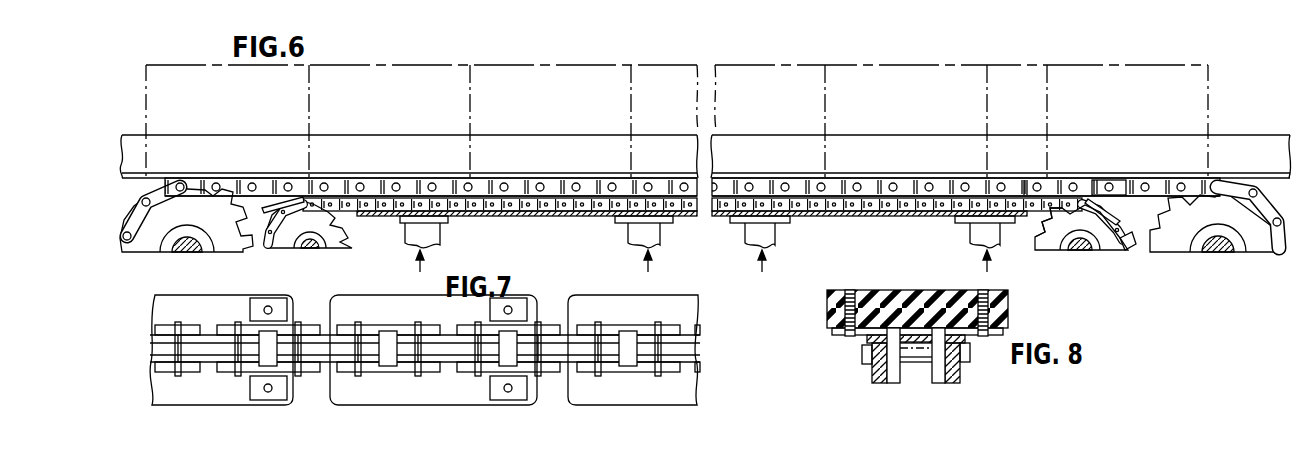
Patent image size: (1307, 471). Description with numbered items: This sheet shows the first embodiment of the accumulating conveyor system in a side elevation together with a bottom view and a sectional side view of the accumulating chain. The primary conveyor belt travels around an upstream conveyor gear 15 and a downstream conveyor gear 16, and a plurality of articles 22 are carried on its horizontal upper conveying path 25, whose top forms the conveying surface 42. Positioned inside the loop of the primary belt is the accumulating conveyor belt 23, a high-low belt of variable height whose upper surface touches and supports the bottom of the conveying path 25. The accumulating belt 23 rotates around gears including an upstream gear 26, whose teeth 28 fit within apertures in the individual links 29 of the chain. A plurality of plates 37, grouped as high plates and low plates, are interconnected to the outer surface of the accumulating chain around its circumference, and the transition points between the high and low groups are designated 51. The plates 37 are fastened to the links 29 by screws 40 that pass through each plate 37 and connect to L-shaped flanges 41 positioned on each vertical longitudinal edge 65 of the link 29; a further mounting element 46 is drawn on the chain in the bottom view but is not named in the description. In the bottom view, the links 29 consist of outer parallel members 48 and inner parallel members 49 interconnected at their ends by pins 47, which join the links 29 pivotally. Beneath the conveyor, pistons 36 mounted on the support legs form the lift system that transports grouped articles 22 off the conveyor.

In FIG. 6, the upstream conveyor gear 15 is at (1178, 242).
In FIG. 6, the downstream conveyor gear 16 is at (146, 247).
In FIG. 6, the articles 22 is at (404, 73).
In FIG. 7, the accumulating conveyor belt 23 is at (158, 346).
In FIG. 6, the upper conveying path 25 is at (324, 231).
In FIG. 6, the upstream gear 26 is at (1104, 243).
In FIG. 6, the teeth 28 is at (1040, 243).
In FIG. 6, the links 29 is at (862, 209).
In FIG. 7, the links 29 is at (508, 348).
In FIG. 8, the links 29 is at (920, 363).
In FIG. 6, the pistons 36 is at (438, 243).
In FIG. 7, the plates 37 is at (344, 300).
In FIG. 8, the plates 37 is at (912, 297).
In FIG. 7, the screws 40 is at (513, 390).
In FIG. 8, the screws 40 is at (850, 290).
In FIG. 8, the L-shaped flanges 41 is at (868, 366).
In FIG. 6, the conveying surface 42 is at (1109, 181).
In FIG. 7, the bracket 46 is at (510, 310).
In FIG. 7, the pins 47 is at (416, 325).
In FIG. 7, the outer parallel members 48 is at (198, 323).
In FIG. 7, the inner parallel members 49 is at (285, 333).
In FIG. 6, the high-low points 51 is at (1028, 180).
In FIG. 8, the vertical longitudinal edge 65 is at (893, 381).